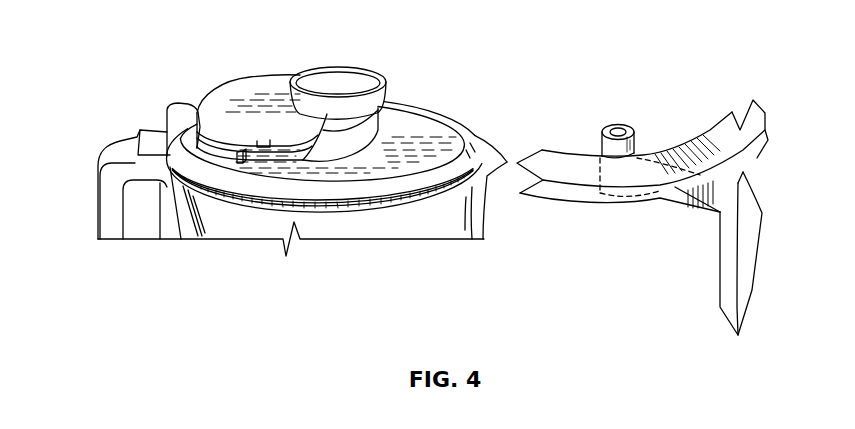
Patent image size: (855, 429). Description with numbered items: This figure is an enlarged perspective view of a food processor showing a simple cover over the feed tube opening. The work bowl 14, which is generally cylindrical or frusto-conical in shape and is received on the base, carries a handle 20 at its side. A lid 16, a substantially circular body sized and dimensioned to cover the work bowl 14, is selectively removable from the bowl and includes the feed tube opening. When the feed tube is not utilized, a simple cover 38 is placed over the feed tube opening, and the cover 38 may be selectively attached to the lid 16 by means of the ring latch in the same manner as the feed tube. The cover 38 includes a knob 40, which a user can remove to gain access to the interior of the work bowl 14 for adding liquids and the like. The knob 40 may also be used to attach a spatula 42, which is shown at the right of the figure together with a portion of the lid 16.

The work bowl 14 is at (258, 229).
The lid 16 is at (403, 131).
The handle 20 is at (117, 186).
The cover 38 is at (277, 91).
The knob 40 is at (333, 80).
The spatula 42 is at (733, 212).